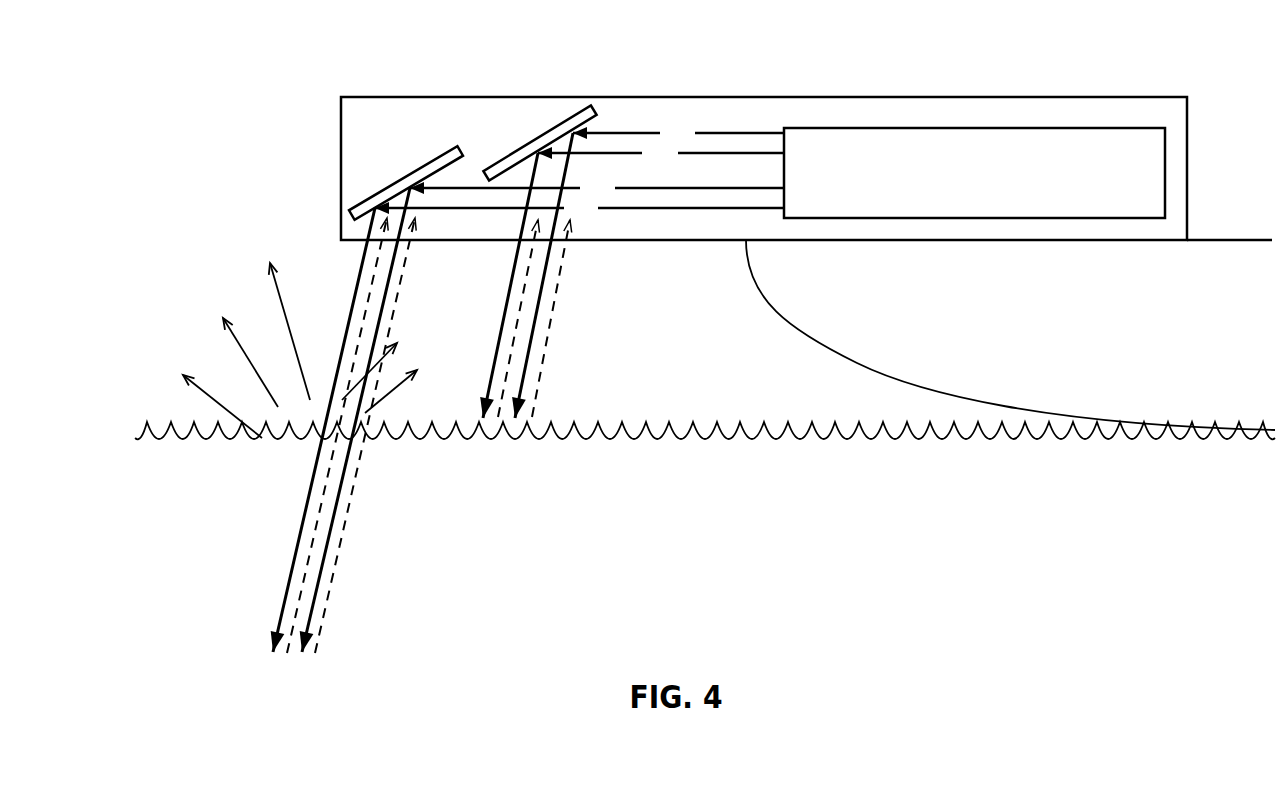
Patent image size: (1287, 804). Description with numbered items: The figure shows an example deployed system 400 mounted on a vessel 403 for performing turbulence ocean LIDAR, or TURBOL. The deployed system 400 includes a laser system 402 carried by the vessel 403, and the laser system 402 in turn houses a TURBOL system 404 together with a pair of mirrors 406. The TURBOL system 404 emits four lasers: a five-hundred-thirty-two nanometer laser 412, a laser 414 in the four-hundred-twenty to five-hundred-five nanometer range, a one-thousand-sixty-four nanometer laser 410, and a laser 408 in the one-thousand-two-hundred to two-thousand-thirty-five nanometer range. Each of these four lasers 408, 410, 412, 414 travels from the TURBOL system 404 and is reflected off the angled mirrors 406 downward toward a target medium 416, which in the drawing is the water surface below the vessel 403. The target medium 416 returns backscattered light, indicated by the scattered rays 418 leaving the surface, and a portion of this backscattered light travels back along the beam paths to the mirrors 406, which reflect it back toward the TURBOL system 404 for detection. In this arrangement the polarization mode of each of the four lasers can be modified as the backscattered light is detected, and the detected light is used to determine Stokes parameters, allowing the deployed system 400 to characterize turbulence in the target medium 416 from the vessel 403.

The deployed system 400 is at (383, 60).
The laser system 402 is at (1080, 95).
The vessel 403 is at (858, 362).
The TURBOL system 404 is at (1166, 158).
The mirrors 406 is at (499, 156).
The 1200-2035 nm laser 408 is at (648, 270).
The 1064 nm laser 410 is at (632, 280).
The 532 nm laser 412 is at (542, 415).
The 420-505 nm laser 414 is at (527, 425).
The target medium 416 is at (695, 424).
The scattered light 418 is at (222, 314).